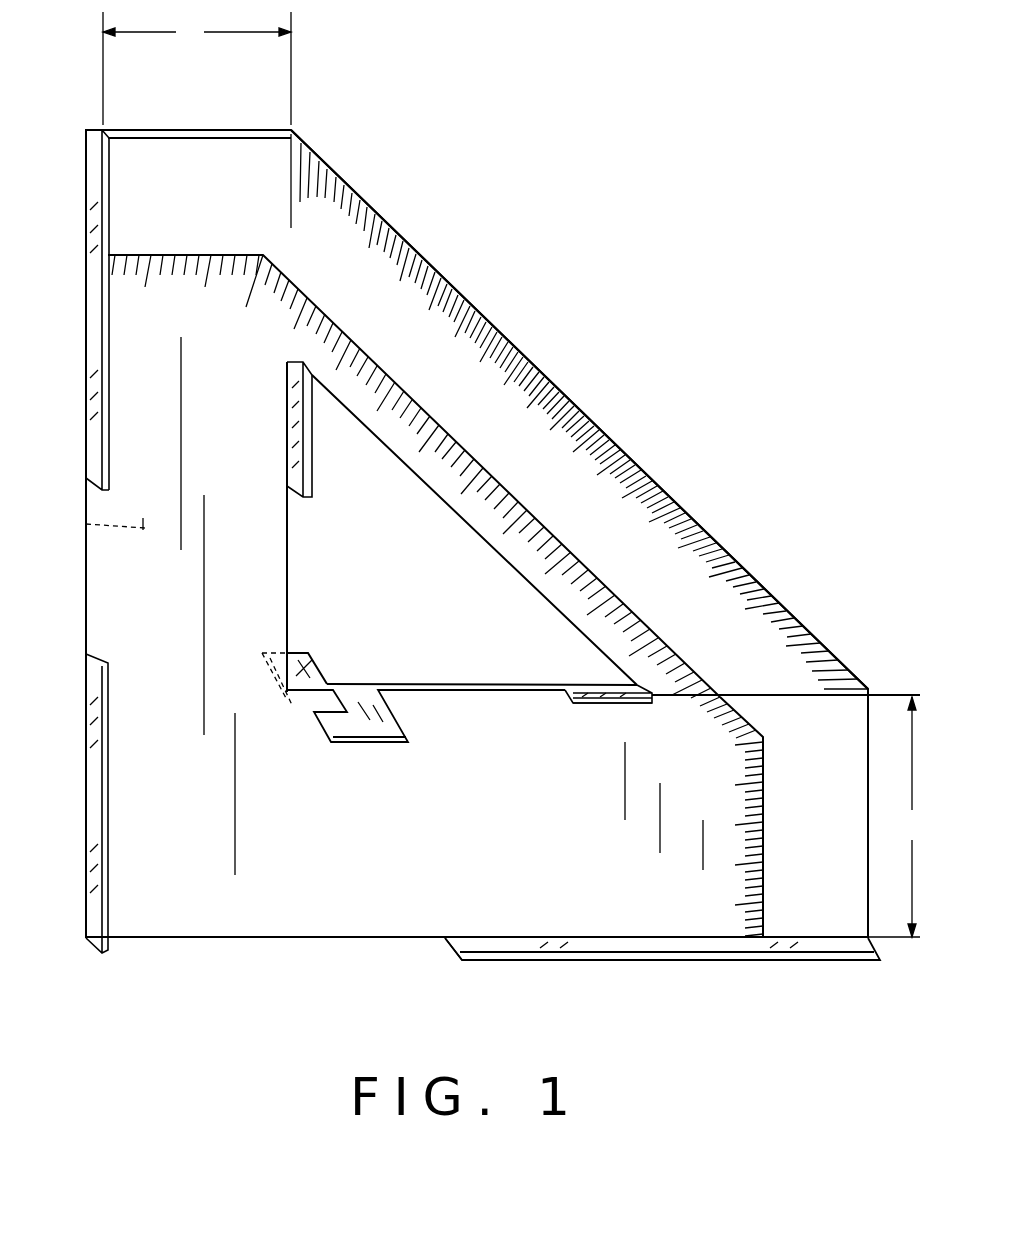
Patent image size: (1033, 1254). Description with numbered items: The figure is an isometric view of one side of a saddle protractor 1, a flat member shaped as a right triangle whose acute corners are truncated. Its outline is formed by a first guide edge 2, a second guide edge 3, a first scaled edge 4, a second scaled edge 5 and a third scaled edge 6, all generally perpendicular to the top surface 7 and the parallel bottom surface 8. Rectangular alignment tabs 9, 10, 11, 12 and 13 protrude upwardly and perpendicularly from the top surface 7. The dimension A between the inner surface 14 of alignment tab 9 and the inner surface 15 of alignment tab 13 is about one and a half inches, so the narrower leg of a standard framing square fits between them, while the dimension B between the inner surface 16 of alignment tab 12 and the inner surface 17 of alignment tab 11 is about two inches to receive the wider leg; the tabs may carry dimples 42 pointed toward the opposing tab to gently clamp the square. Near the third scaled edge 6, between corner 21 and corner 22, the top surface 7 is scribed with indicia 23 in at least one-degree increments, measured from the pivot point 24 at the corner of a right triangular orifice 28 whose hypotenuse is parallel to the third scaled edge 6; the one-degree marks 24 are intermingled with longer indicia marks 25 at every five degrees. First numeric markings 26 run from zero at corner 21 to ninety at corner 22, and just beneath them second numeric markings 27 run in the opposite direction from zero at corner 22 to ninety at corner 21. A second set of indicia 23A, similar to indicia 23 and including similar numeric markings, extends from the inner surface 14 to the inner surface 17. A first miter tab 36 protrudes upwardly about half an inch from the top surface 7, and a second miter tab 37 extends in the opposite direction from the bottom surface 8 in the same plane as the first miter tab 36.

The saddle protractor 1 is at (610, 189).
The first guide edge 2 is at (86, 597).
The second guide edge 3 is at (203, 937).
The first scaled edge 4 is at (165, 128).
The second scaled edge 5 is at (868, 773).
The third scaled edge 6 is at (727, 548).
The top surface 7 is at (145, 592).
The bottom surface 8 is at (86, 522).
The alignment tab 9 is at (103, 323).
The alignment tab 10 is at (102, 800).
The alignment tab 11 is at (710, 965).
The alignment tab 12 is at (618, 712).
The alignment tab 13 is at (312, 418).
The inner surface 14 is at (110, 412).
The inner surface 15 is at (290, 483).
The inner surface 16 is at (498, 693).
The inner surface 17 is at (477, 947).
The corner 21 is at (292, 130).
The corner 22 is at (868, 689).
The indicia 23 is at (463, 590).
The second set of indicia 23A is at (350, 360).
The one degree increment marks / pivot point 24 is at (508, 385).
The longer indicia marks 25 is at (465, 345).
The first numeric markings 26 is at (300, 238).
The second numeric markings 27 is at (310, 252).
The right triangular orifice 28 is at (628, 460).
The first miter tab 36 is at (363, 743).
The second miter tab 37 is at (307, 650).
The dimples 42 is at (93, 222).